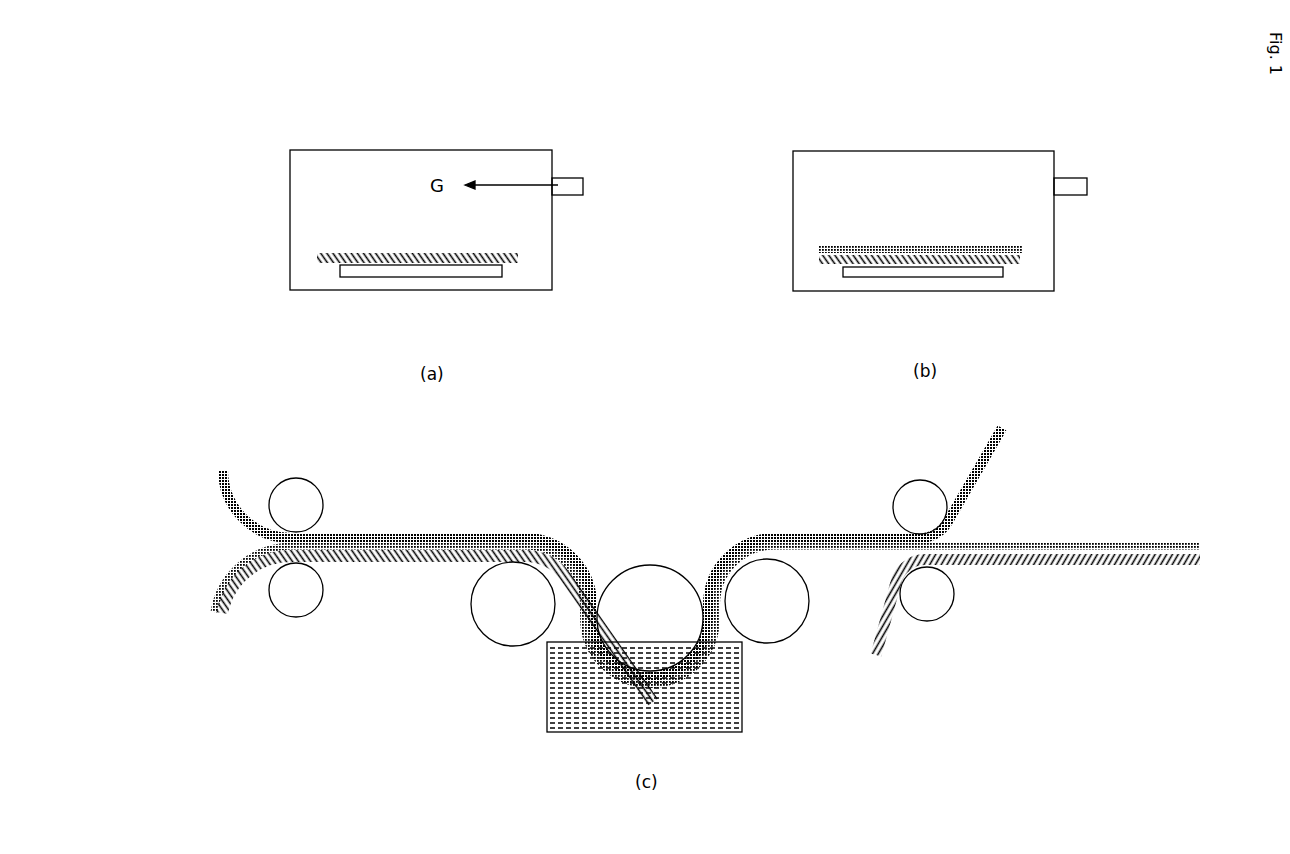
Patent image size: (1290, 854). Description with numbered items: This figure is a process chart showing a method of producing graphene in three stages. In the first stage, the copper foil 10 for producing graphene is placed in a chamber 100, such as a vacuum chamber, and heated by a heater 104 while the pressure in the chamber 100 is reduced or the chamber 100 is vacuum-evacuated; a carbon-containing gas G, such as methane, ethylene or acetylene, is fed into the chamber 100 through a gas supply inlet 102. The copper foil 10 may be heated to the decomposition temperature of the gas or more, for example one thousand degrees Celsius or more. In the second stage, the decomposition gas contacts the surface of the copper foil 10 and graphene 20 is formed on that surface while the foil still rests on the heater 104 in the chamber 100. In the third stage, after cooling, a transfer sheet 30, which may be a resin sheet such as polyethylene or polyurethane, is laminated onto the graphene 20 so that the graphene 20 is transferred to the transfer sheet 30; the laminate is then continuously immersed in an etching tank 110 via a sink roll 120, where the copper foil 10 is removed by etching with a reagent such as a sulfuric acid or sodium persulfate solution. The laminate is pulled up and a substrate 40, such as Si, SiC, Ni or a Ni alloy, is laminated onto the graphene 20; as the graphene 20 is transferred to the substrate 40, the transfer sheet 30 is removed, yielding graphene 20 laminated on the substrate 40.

The copper foil for producing graphene 10 is at (518, 258).
The graphene 20 is at (1002, 241).
The transfer sheet 30 is at (228, 490).
The substrate 40 is at (893, 637).
The chamber 100 is at (523, 150).
The gas supply inlet 102 is at (577, 178).
The heater 104 is at (445, 277).
The etching tank 110 is at (742, 697).
The sink roll 120 is at (667, 578).